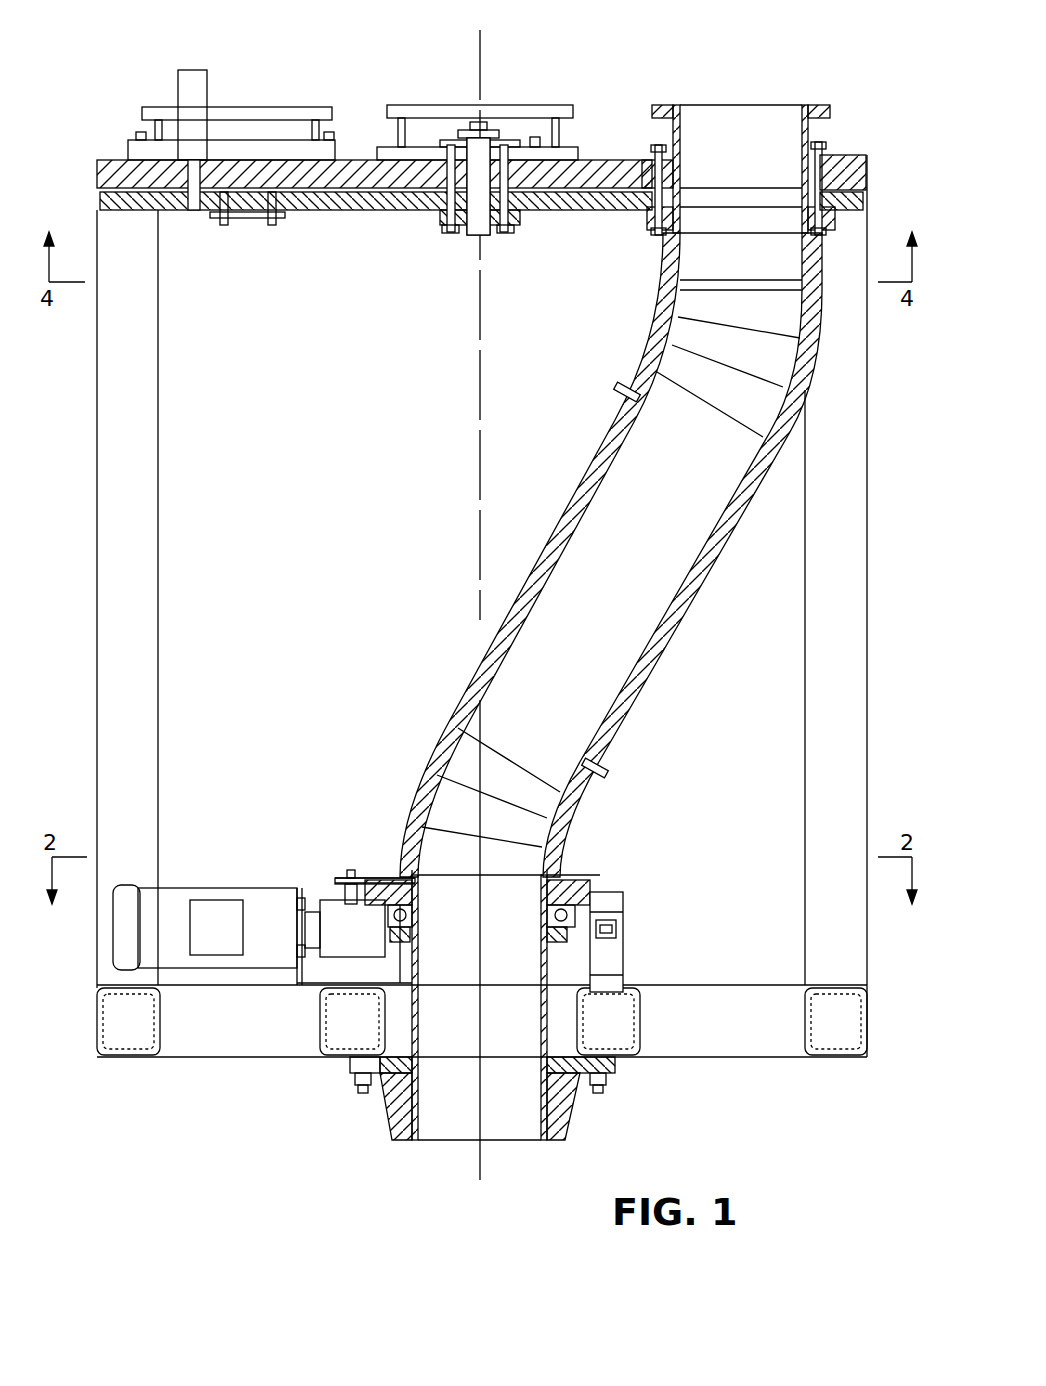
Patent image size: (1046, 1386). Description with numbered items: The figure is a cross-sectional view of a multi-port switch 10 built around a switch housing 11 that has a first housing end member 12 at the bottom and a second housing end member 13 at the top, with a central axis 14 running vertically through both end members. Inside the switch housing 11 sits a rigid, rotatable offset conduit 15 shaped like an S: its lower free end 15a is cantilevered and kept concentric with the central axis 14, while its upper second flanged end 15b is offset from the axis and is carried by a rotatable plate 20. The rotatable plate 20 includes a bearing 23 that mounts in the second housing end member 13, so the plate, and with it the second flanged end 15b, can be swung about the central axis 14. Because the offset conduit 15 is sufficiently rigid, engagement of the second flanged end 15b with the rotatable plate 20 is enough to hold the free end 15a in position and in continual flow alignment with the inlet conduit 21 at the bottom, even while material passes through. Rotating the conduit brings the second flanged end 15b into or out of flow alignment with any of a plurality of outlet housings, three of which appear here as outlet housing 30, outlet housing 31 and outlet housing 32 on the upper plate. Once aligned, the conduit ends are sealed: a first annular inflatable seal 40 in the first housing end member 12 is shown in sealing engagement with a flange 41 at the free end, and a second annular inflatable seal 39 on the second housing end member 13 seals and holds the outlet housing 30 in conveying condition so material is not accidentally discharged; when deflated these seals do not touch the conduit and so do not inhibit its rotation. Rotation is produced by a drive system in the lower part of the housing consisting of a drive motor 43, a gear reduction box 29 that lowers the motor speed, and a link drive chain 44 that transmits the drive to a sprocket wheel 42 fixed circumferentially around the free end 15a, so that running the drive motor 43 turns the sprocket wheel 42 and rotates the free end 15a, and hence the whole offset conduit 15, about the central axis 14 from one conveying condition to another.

The multi-port switch 10 is at (654, 56).
The switch housing 11 is at (867, 548).
The first housing end member 12 is at (752, 1062).
The second housing end member 13 is at (850, 162).
The central axis 14 is at (482, 38).
The offset conduit 15 is at (542, 560).
The free end 15a is at (570, 876).
The second flanged end 15b is at (642, 226).
The rotatable plate 20 is at (866, 195).
The inlet conduit 21 is at (385, 1090).
The bearing 23 is at (440, 212).
The gear reduction box 29 is at (350, 940).
The outlet housing 30 is at (663, 107).
The outlet housing 31 is at (556, 107).
The outlet housing 32 is at (306, 107).
The second annular inflatable seal 39 is at (826, 145).
The first annular inflatable seal 40 is at (600, 902).
The flange 41 is at (600, 878).
The sprocket wheel 42 is at (392, 878).
The drive motor 43 is at (250, 888).
The link drive chain 44 is at (342, 878).